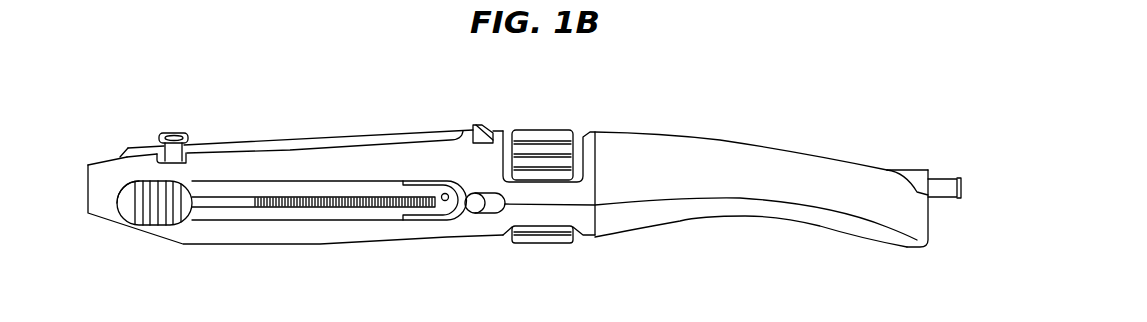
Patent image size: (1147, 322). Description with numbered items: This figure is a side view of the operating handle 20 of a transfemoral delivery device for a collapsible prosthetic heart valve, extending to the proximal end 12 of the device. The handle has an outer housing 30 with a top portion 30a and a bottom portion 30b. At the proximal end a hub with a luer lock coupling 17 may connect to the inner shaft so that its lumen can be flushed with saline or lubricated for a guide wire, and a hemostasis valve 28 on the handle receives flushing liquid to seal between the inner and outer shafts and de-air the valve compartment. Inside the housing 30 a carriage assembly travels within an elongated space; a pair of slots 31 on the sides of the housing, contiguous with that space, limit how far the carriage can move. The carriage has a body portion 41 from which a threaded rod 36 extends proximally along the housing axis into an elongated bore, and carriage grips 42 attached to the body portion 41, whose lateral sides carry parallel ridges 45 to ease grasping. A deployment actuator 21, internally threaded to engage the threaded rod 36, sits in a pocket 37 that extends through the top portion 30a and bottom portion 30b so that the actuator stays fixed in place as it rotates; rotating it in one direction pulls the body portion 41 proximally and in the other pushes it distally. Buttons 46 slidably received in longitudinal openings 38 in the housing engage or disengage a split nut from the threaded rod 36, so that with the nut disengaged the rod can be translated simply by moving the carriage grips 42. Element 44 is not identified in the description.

The operating handle 20 is at (165, 98).
The hemostasis valve 28 is at (180, 132).
The latch pin 44 is at (473, 128).
The parallel ridges 45 is at (148, 208).
The carriage grips 42 is at (130, 213).
The body portion 41 is at (195, 208).
The slots 31 is at (233, 200).
The threaded rod 36 is at (307, 220).
The buttons 46 is at (473, 212).
The longitudinal openings 38 is at (492, 214).
The deployment actuator 21 is at (533, 245).
The pocket 37 is at (578, 243).
The top portion 30a is at (645, 133).
The bottom portion 30b is at (648, 231).
The outer housing 30 is at (758, 138).
The proximal end 12 is at (931, 225).
The luer lock coupling 17 is at (958, 178).